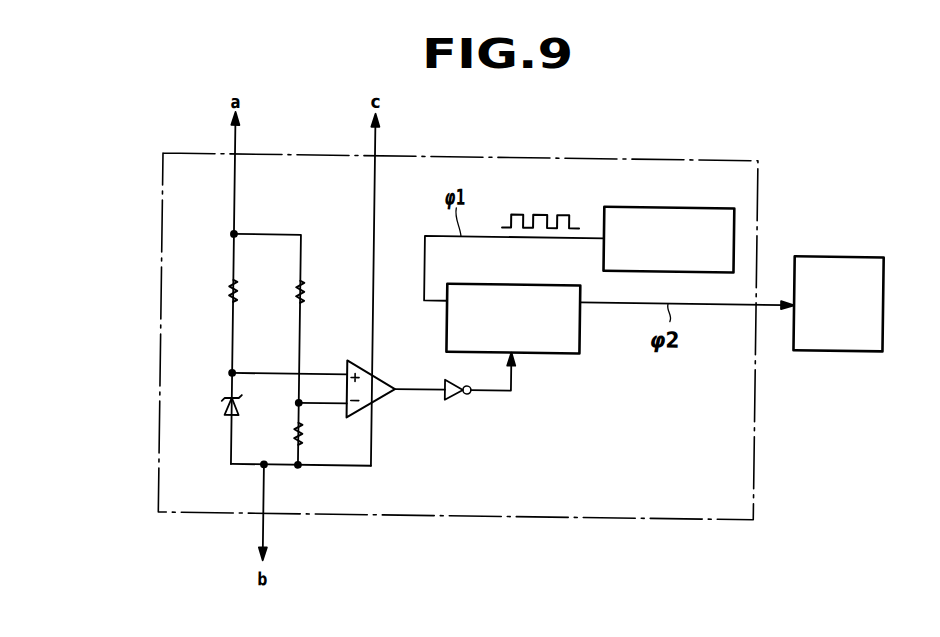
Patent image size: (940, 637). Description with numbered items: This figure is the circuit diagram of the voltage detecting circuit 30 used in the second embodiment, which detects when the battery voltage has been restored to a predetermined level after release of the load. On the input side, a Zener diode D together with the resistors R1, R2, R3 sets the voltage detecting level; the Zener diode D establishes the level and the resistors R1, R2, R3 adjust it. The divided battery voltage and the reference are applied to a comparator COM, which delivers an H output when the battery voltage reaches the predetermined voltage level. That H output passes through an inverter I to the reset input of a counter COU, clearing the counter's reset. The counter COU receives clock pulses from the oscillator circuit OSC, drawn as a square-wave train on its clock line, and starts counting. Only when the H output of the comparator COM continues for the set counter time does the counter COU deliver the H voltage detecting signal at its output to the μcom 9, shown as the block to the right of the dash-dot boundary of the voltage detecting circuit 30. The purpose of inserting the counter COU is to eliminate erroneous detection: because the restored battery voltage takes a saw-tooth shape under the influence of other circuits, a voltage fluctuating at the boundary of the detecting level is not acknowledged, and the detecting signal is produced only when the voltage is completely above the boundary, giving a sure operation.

The voltage detecting circuit 30 is at (716, 153).
The μcom 9 is at (856, 248).
The resistor R1 is at (242, 291).
The resistor R2 is at (309, 291).
The resistor R3 is at (309, 432).
The Zener diode D is at (245, 407).
The comparator COM is at (383, 377).
The inverter I is at (459, 382).
The counter COU is at (534, 280).
The oscillator circuit OSC is at (693, 201).